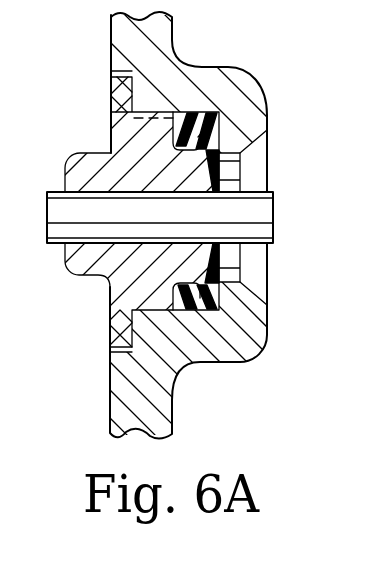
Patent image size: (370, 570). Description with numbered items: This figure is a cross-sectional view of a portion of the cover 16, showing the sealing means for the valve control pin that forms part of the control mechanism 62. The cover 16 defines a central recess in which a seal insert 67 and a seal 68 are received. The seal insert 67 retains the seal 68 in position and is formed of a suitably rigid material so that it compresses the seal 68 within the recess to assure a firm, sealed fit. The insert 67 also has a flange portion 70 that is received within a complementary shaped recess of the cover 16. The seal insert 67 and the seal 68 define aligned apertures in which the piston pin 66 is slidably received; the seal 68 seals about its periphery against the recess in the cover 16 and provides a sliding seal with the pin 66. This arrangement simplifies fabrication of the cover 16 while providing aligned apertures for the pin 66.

The cover 16 is at (245, 337).
The control mechanism 62 is at (76, 292).
The piston pin 66 is at (262, 218).
The seal insert 67 is at (113, 160).
The seal 68 is at (216, 111).
The flange portion 70 is at (117, 110).